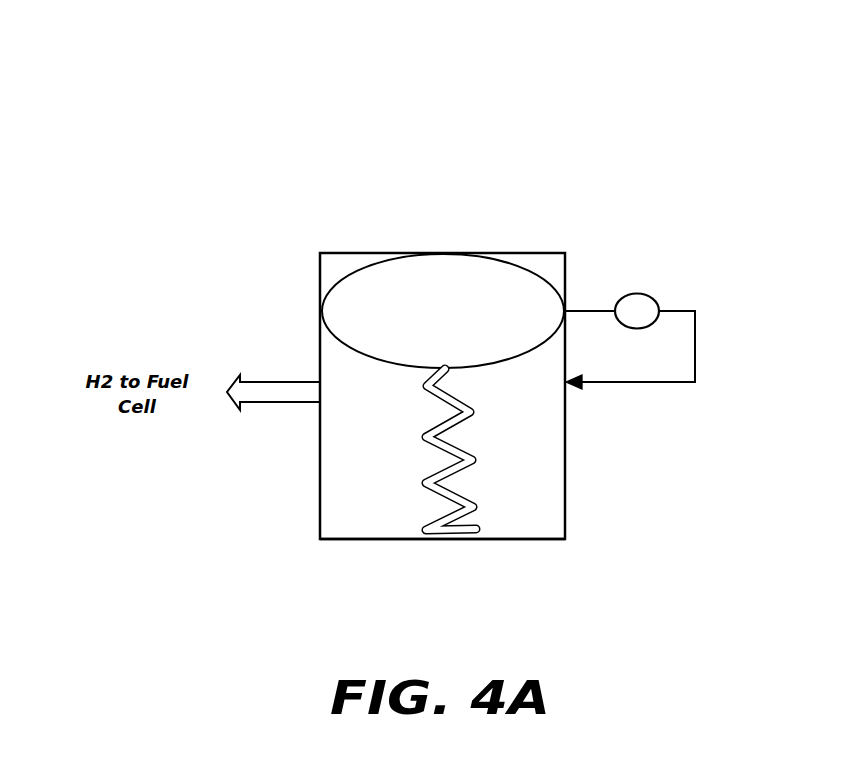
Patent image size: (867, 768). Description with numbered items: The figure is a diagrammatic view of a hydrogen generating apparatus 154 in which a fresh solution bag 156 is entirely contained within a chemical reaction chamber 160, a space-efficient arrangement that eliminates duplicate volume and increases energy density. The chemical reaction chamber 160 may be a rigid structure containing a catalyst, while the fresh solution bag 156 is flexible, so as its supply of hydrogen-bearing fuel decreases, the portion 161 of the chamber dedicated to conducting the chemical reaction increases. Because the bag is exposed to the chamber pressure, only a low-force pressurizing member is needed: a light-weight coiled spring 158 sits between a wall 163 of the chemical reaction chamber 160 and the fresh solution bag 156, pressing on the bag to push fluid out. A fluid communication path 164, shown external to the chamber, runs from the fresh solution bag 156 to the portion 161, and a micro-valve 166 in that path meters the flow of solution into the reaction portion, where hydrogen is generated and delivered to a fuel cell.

The hydrogen generating apparatus 154 is at (717, 97).
The fresh solution bag 156 is at (528, 268).
The coiled spring 158 is at (423, 435).
The chemical reaction chamber 160 is at (565, 515).
The portion of the chemical reaction chamber dedicated to conducting the chemical re 161 is at (533, 460).
The wall of the chemical reaction chamber 163 is at (368, 540).
The fluid communication path 164 is at (695, 352).
The micro-valve 166 is at (650, 295).